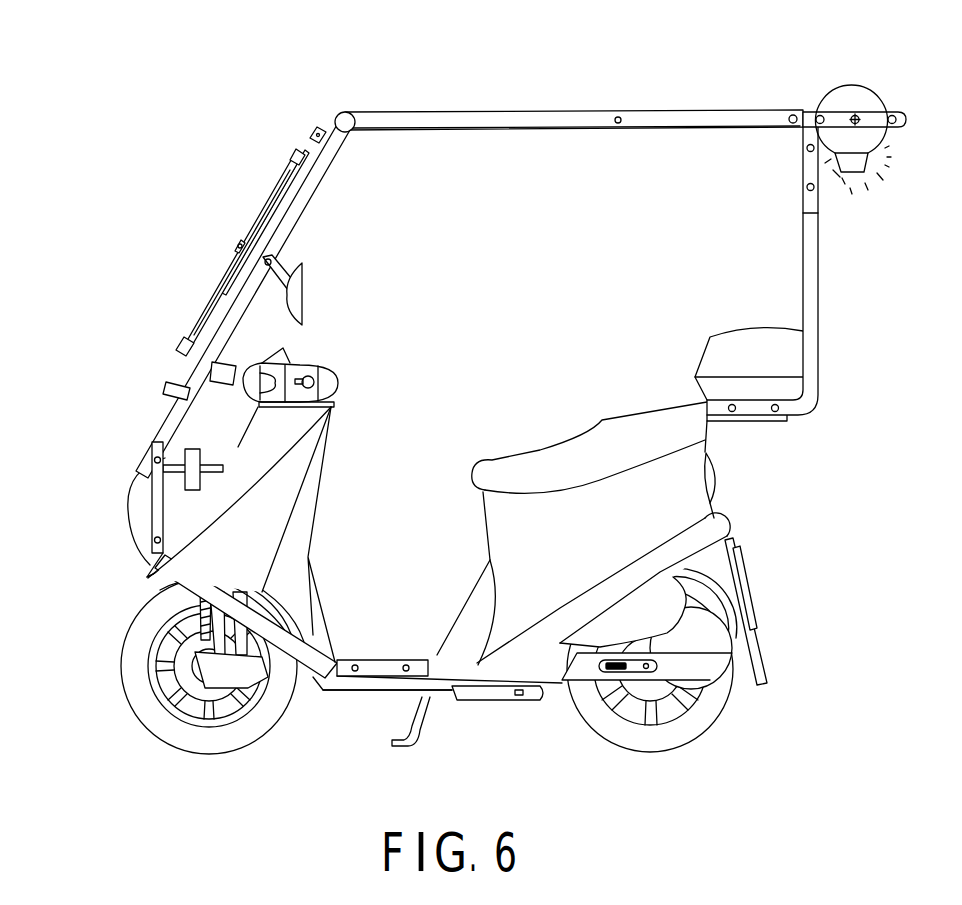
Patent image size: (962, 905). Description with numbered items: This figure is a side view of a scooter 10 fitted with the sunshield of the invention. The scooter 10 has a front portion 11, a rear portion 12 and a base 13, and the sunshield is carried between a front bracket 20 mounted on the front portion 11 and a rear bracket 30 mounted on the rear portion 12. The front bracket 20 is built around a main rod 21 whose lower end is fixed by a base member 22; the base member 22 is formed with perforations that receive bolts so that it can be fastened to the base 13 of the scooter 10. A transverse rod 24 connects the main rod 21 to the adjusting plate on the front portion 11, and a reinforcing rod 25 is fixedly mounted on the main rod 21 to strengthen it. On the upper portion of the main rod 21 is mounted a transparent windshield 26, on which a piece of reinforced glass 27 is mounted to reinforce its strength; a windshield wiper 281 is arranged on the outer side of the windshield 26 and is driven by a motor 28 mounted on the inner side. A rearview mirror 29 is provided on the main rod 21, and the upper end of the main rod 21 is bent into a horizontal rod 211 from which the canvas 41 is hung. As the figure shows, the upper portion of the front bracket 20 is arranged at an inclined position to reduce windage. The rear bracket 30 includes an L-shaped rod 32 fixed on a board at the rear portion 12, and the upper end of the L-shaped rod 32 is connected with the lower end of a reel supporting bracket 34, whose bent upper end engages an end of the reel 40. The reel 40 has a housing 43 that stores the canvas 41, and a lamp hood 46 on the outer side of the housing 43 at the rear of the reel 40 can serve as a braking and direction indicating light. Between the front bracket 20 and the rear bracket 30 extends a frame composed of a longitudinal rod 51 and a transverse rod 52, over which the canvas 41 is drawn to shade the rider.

The scooter 10 is at (512, 435).
The front portion 11 is at (292, 470).
The rear portion 12 is at (770, 423).
The base 13 is at (372, 693).
The front bracket 20 is at (210, 272).
The main rod 21 is at (302, 204).
The horizontal rod 211 is at (345, 112).
The base member 22 is at (391, 616).
The transverse rod 24 is at (167, 455).
The reinforcing rod 25 is at (157, 511).
The transparent windshield 26 is at (312, 140).
The reinforced glass 27 is at (300, 170).
The motor 28 is at (224, 374).
The windshield wiper 281 is at (255, 232).
The rearview mirror 29 is at (303, 299).
The rear bracket 30 is at (830, 246).
The L-shaped rod 32 is at (820, 288).
The reel supporting bracket 34 is at (885, 118).
The reel 40 is at (873, 76).
The canvas 41 is at (419, 111).
The housing 43 is at (848, 91).
The lamp hood 46 is at (866, 172).
The longitudinal rod 51 is at (527, 128).
The transverse rod 52 is at (619, 124).